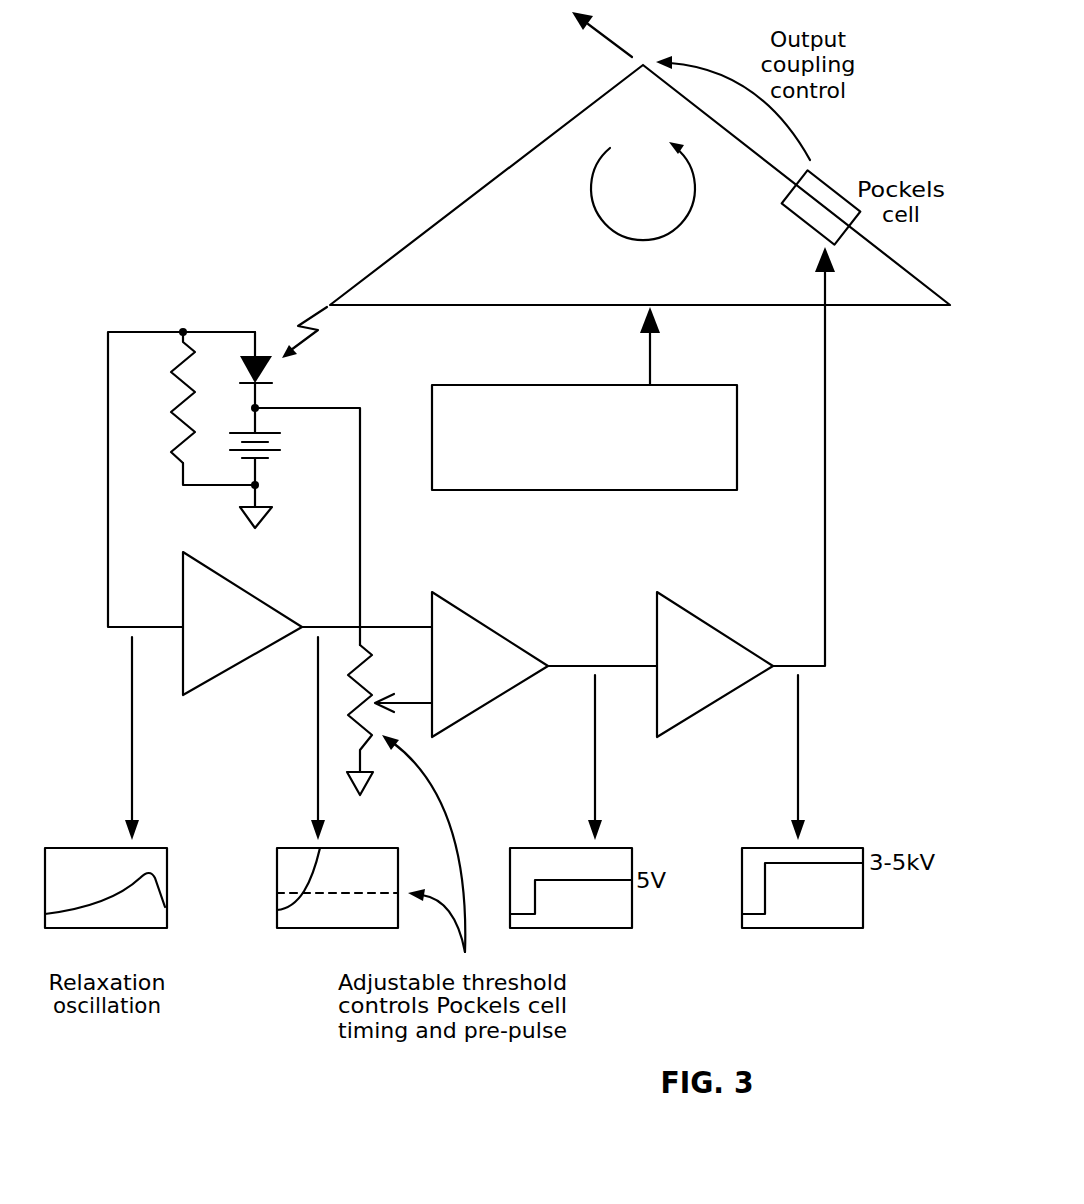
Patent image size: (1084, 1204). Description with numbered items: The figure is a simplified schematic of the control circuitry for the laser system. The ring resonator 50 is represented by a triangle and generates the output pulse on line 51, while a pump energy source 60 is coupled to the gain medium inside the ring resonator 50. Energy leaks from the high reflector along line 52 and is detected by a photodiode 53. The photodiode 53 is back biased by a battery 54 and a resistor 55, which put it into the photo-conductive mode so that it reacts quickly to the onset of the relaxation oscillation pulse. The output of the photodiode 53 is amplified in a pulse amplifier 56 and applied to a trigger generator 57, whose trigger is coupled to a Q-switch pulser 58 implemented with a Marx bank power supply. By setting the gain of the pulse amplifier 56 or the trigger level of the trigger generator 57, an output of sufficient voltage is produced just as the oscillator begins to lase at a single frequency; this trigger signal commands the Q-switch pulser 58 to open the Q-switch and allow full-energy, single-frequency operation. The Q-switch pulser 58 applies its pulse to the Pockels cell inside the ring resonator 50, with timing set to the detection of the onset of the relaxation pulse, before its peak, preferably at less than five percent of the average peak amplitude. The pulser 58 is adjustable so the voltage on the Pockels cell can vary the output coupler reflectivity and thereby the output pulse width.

The ring resonator 50 is at (640, 185).
The output pulse line 51 is at (609, 37).
The energy leak line 52 is at (327, 322).
The photodiode 53 is at (264, 350).
The battery 54 is at (272, 463).
The resistor 55 is at (180, 463).
The pulse amplifier 56 is at (237, 643).
The trigger generator 57 is at (487, 634).
The Q-switch pulser 58 is at (712, 634).
The pump energy source 60 is at (584, 398).